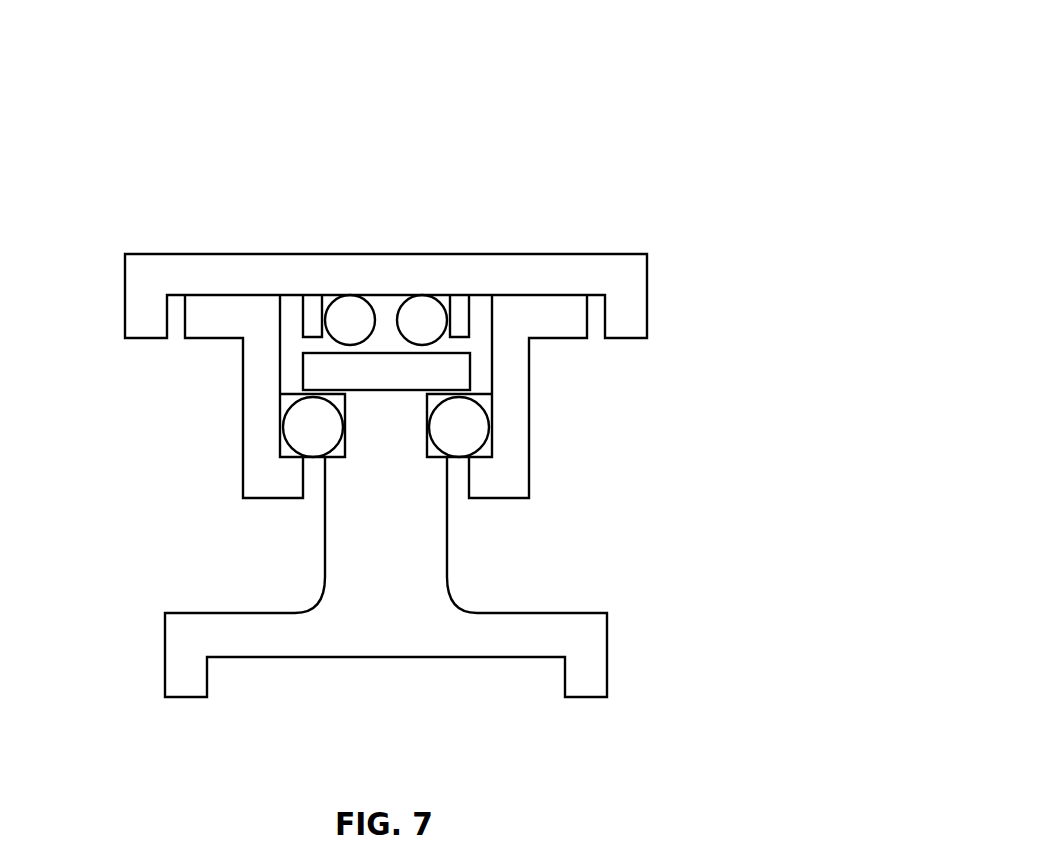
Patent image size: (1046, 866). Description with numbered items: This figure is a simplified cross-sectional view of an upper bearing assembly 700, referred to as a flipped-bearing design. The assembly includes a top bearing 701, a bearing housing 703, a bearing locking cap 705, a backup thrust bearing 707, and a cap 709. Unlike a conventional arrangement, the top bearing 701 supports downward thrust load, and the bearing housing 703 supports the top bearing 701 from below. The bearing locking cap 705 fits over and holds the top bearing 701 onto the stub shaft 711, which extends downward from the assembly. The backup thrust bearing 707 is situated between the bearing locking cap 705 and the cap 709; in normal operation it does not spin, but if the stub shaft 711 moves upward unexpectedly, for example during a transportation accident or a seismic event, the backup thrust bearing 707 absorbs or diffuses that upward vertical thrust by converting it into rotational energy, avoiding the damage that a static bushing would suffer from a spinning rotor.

The upper bearing assembly 700 is at (681, 97).
The top bearing 701 is at (458, 412).
The bearing housing 703 is at (532, 468).
The bearing locking cap 705 is at (310, 377).
The backup thrust bearing 707 is at (352, 318).
The cap 709 is at (515, 254).
The stub shaft 711 is at (608, 644).